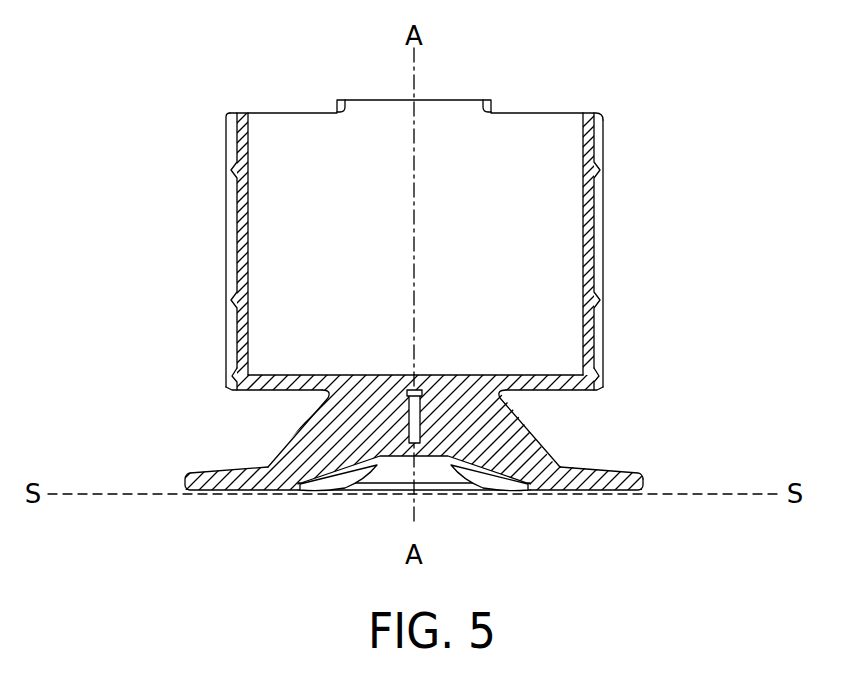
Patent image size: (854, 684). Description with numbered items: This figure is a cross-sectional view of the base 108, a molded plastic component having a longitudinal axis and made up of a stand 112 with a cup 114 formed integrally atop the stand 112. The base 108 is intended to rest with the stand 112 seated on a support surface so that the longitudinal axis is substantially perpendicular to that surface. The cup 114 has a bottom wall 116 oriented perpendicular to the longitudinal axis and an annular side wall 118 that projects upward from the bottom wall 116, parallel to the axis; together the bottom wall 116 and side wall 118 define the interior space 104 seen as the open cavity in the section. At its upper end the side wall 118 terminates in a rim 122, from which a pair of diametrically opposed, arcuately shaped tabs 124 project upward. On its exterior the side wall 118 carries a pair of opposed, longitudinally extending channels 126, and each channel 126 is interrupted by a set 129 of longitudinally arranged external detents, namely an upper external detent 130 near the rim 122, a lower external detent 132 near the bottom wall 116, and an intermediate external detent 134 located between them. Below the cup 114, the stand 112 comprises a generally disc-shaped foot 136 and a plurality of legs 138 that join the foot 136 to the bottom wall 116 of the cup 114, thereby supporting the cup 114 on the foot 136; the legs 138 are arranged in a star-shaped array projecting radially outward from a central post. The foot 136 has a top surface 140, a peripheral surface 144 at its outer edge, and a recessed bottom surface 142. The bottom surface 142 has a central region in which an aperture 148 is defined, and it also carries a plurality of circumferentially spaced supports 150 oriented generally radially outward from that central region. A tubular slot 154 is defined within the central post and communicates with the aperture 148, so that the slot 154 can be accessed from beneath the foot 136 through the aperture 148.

The base 108 is at (195, 83).
The interior space 104 is at (319, 180).
The tabs 124 is at (443, 100).
The rim 122 is at (543, 112).
The upper external detent 130 is at (234, 168).
The channels 126 is at (233, 212).
The intermediate external detent 134 is at (234, 297).
The set of longitudinally-arranged external detents 129 is at (218, 319).
The lower external detent 132 is at (235, 372).
The cup 114 is at (607, 218).
The side wall 118 is at (604, 280).
The bottom wall 116 is at (600, 392).
The stand 112 is at (640, 468).
The legs 138 is at (305, 433).
The foot 136 is at (218, 470).
The top surface 140 is at (576, 466).
The peripheral surface 144 is at (645, 478).
The bottom surface 142 is at (548, 490).
The aperture 148 is at (405, 486).
The supports 150 is at (500, 484).
The tubular slot 154 is at (422, 396).